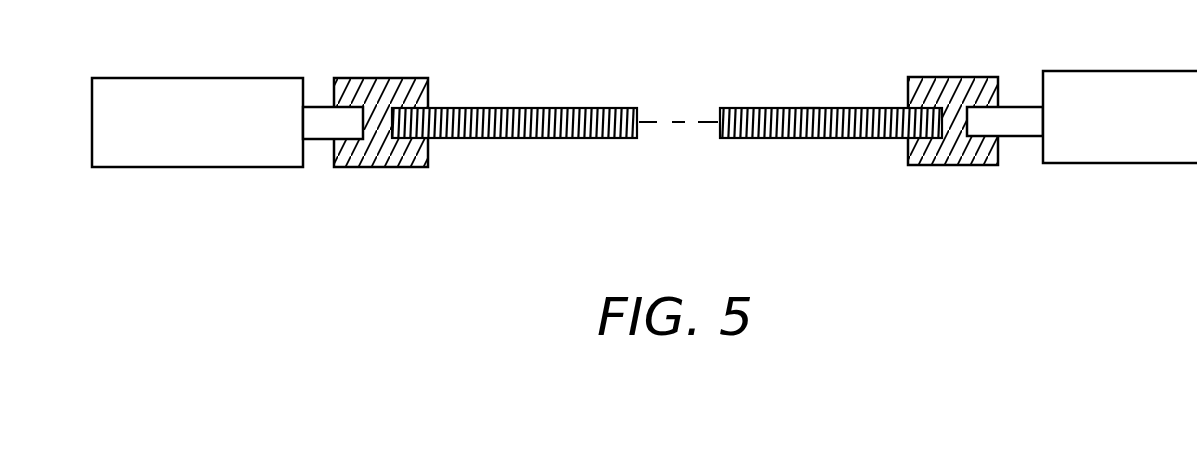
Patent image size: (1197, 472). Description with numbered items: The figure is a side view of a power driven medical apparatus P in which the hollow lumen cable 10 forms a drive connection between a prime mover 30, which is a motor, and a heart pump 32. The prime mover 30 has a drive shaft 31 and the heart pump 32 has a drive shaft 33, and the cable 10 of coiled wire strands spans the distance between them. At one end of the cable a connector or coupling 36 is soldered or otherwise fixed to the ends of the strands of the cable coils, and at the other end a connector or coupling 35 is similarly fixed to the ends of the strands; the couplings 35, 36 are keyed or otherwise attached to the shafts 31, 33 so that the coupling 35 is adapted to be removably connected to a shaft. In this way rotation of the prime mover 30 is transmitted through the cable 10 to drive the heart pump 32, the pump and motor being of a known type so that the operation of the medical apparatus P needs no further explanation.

The hollow lumen cable 10 is at (728, 146).
The prime mover 30 is at (253, 90).
The drive shaft 31 is at (342, 118).
The heart pump 32 is at (1097, 80).
The drive shaft 33 is at (1003, 117).
The connector (coupling) 35 is at (923, 78).
The connector (coupling) 36 is at (415, 80).
The medical apparatus P is at (810, 107).